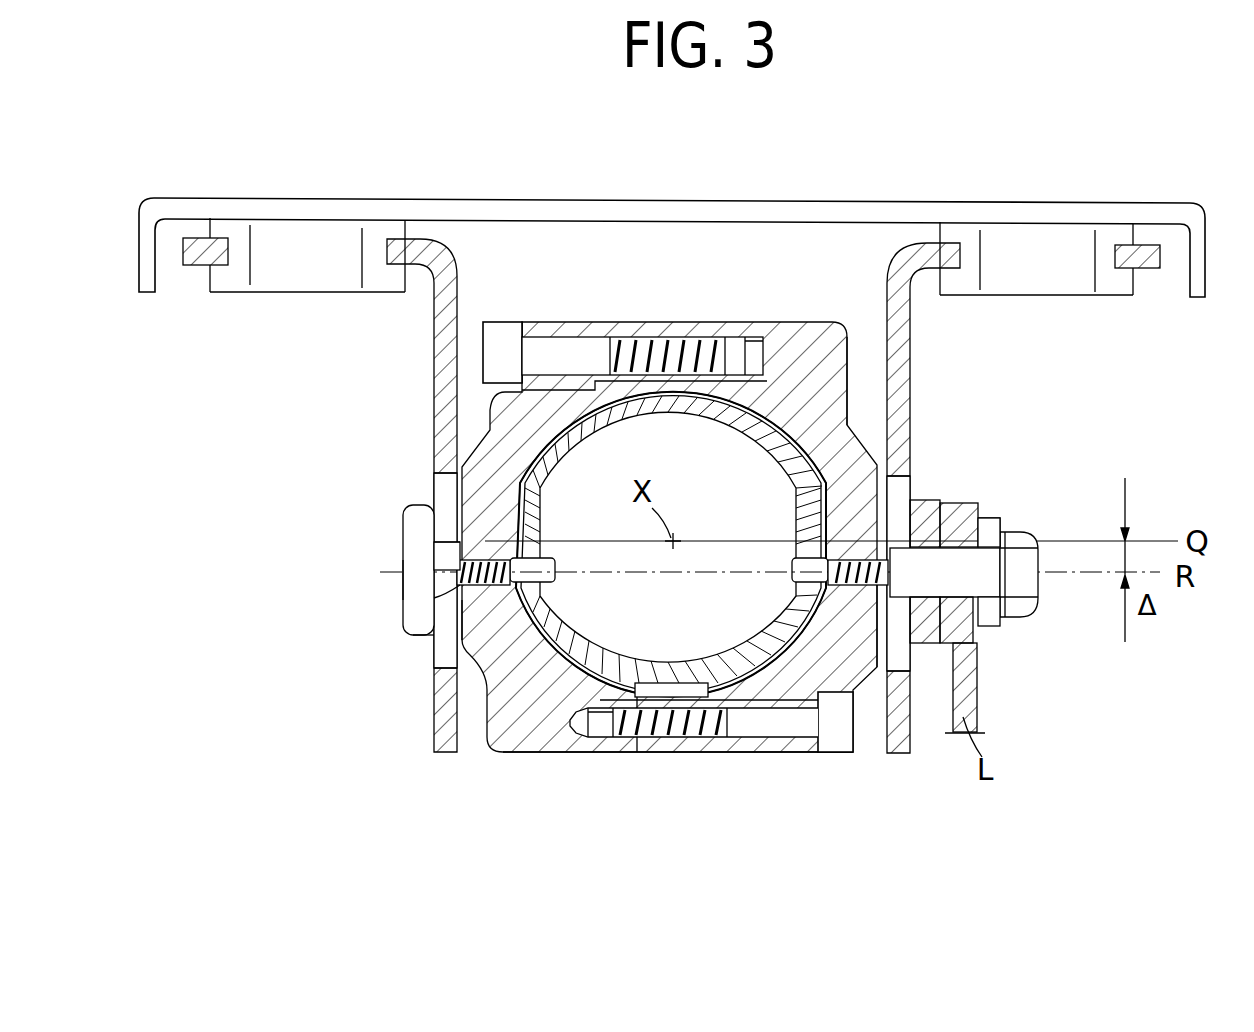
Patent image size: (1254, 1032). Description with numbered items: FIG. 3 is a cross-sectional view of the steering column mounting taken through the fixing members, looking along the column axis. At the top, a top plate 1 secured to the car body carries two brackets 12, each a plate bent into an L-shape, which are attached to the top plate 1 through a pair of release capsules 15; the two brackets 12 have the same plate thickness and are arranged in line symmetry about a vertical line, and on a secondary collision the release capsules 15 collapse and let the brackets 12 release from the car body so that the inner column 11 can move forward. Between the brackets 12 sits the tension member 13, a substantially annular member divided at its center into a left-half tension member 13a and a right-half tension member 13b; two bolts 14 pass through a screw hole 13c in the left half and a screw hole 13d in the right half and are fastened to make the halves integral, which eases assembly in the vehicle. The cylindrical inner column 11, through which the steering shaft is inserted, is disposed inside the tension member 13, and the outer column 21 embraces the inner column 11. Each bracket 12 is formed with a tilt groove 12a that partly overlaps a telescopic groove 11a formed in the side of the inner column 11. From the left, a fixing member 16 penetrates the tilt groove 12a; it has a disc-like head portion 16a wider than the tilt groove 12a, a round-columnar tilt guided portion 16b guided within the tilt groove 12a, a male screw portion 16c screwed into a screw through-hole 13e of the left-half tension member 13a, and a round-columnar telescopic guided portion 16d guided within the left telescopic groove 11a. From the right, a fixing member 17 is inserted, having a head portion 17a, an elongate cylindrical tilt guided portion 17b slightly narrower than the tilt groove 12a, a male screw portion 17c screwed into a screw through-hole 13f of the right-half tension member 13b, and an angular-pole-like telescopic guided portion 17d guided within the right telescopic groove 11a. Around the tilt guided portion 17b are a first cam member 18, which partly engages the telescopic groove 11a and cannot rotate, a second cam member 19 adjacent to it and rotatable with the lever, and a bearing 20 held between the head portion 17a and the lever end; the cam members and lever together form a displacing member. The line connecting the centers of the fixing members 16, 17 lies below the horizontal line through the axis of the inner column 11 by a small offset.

The top plate 1 is at (825, 222).
The inner column 11 is at (698, 410).
The telescopic groove 11a is at (553, 570).
The bracket 12 is at (443, 745).
The tilt groove 12a is at (443, 490).
The tension member 13 is at (689, 580).
The left-half tension member 13a is at (547, 742).
The right-half tension member 13b is at (730, 752).
The screw hole 13c is at (632, 748).
The screw hole 13d is at (686, 345).
The screw through-hole 13e is at (470, 573).
The screw through-hole 13f is at (880, 672).
The bolt 14 is at (577, 350).
The release capsule 15 is at (231, 277).
The fixing member 16 is at (414, 661).
The head portion 16a is at (413, 603).
The tilt guided portion 16b is at (443, 555).
The male screw portion 16c is at (433, 650).
The telescopic guided portion 16d is at (540, 600).
The fixing member 17 is at (952, 608).
The head portion 17a is at (1023, 530).
The tilt guided portion 17b is at (1038, 595).
The male screw portion 17c is at (923, 498).
The telescopic guided portion 17d is at (828, 600).
The first cam member 18 is at (940, 498).
The second cam member 19 is at (967, 498).
The bearing 20 is at (983, 627).
The outer column 21 is at (793, 397).